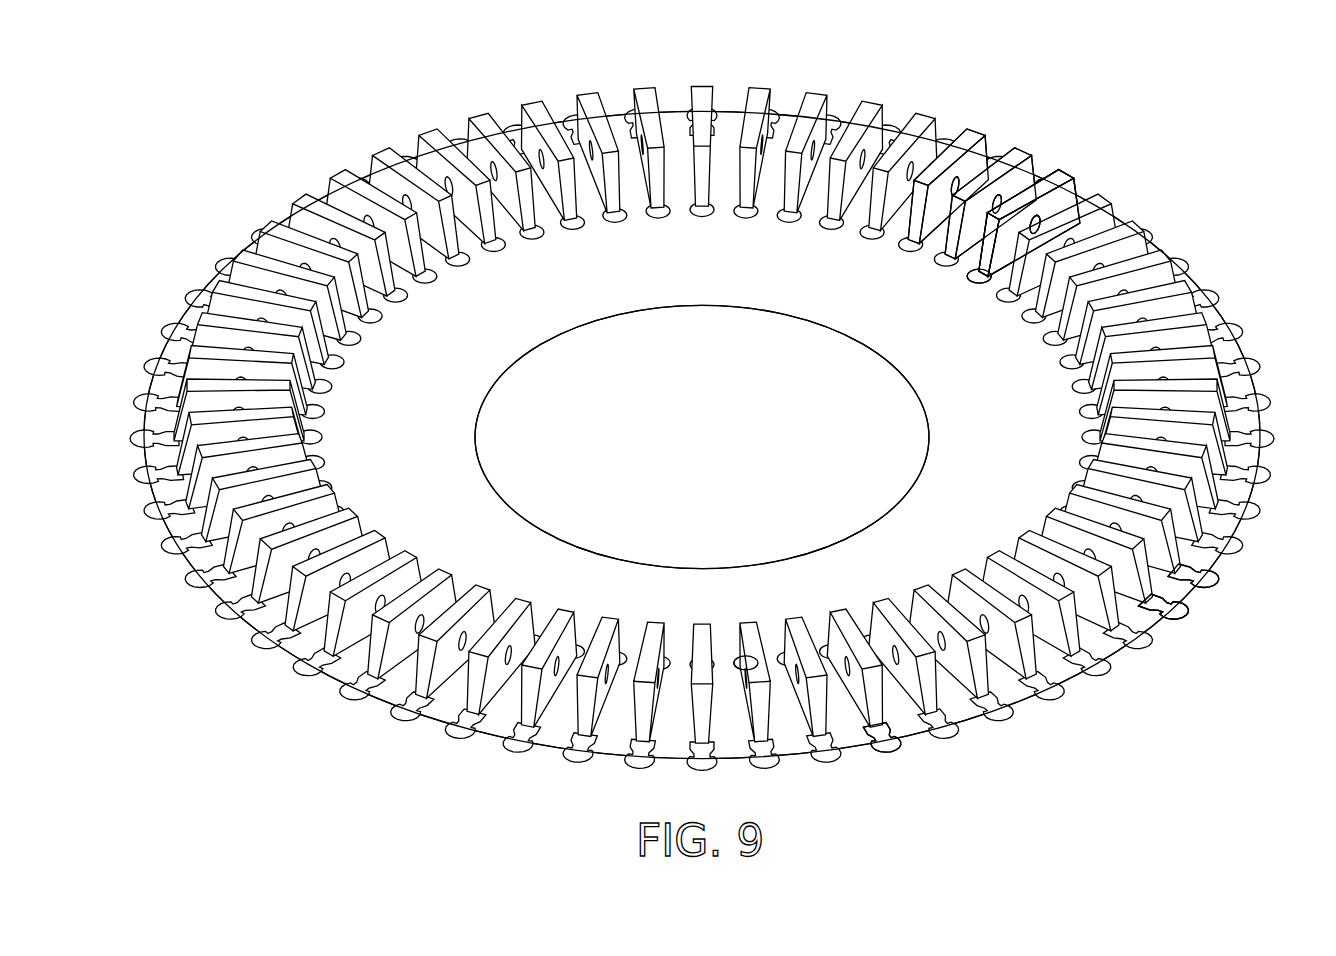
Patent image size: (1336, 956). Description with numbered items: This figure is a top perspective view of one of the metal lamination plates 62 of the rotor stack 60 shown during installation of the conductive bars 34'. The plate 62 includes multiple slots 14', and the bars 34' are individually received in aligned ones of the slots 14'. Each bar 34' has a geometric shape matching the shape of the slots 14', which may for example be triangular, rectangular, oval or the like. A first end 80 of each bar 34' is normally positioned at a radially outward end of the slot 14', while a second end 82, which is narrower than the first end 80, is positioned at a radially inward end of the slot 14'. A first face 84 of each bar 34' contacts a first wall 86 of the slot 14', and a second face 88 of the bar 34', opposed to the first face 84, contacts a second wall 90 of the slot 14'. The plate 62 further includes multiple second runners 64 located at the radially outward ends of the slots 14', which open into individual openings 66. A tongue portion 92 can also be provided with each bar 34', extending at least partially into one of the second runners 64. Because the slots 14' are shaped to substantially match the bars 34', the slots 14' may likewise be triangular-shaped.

The rotor stack 60 is at (1070, 78).
The metal lamination plate 62 is at (1150, 246).
The second runner 64 is at (1188, 592).
The opening 66 is at (1185, 600).
The first end 80 is at (1028, 165).
The second end 82 is at (934, 254).
The first face 84 is at (1048, 192).
The first wall 86 is at (800, 718).
The second face 88 is at (975, 168).
The second wall 90 is at (855, 738).
The tongue portion 92 is at (1145, 605).
The slot 14' is at (845, 533).
The bar 34' is at (1022, 181).